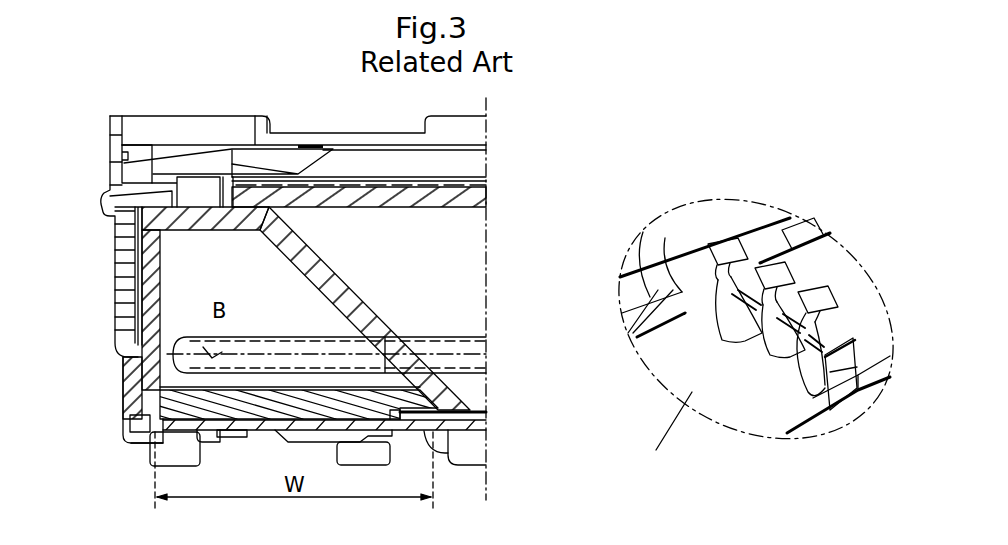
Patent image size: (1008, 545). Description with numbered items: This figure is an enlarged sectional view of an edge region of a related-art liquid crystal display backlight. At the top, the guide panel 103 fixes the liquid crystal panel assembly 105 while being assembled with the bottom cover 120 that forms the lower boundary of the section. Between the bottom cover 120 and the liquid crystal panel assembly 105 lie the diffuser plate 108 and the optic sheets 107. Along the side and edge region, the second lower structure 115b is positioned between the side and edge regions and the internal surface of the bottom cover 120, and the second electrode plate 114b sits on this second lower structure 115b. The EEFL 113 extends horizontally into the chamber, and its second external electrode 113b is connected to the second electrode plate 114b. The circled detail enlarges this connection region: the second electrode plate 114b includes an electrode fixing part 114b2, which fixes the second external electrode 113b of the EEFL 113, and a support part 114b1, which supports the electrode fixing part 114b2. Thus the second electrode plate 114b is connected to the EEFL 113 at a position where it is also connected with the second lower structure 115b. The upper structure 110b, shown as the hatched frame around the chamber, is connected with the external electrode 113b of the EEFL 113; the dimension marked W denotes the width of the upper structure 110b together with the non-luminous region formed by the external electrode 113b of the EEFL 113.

The guide panel 103 is at (117, 183).
The liquid crystal panel assembly 105 is at (481, 157).
The optic sheets 107 is at (489, 178).
The diffuser plate 108 is at (486, 198).
The upper structure 110b is at (150, 248).
The EEFL 113 is at (457, 354).
The second external electrode 113b is at (130, 418).
The second electrode plate 114b is at (737, 378).
The support part 114b1 is at (785, 417).
The electrode fixing part 114b2 is at (748, 345).
The second lower structure 115b is at (130, 400).
The bottom cover 120 is at (486, 420).